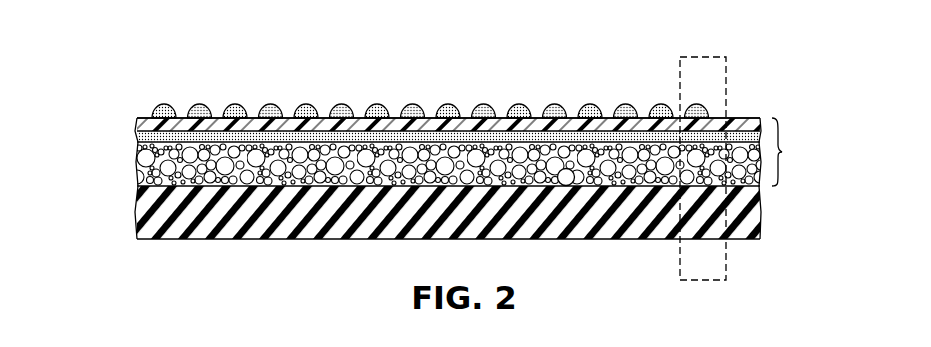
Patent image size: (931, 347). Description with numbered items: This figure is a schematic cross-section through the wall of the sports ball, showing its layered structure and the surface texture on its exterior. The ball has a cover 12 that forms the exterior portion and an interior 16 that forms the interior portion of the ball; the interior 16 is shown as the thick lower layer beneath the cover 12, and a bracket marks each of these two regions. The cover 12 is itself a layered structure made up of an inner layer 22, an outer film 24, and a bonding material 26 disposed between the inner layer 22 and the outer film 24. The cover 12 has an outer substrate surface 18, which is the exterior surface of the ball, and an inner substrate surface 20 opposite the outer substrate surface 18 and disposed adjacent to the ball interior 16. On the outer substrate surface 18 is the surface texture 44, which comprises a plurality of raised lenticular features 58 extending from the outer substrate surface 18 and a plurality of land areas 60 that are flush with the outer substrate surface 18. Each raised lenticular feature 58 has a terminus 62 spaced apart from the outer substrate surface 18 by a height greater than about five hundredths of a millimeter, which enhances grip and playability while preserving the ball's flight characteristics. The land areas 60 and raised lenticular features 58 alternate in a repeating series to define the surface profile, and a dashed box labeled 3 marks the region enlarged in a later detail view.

The detail region of FIG. 3 is at (695, 57).
The cover 12 is at (794, 152).
The interior 16 is at (137, 208).
The outer substrate surface 18 is at (742, 118).
The inner substrate surface 20 is at (567, 186).
The inner layer 22 is at (137, 160).
The outer film 24 is at (132, 119).
The bonding material 26 is at (137, 137).
The surface texture 44 is at (447, 81).
The raised lenticular features 58 is at (163, 103).
The land areas 60 is at (291, 117).
The terminus 62 is at (484, 103).